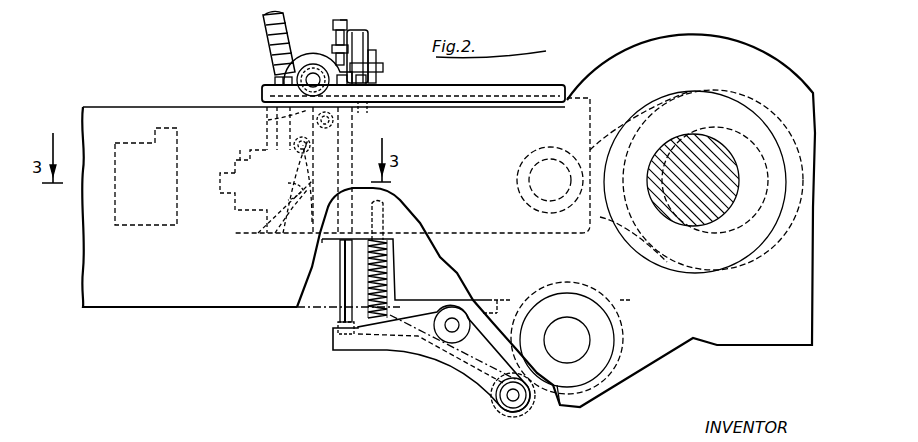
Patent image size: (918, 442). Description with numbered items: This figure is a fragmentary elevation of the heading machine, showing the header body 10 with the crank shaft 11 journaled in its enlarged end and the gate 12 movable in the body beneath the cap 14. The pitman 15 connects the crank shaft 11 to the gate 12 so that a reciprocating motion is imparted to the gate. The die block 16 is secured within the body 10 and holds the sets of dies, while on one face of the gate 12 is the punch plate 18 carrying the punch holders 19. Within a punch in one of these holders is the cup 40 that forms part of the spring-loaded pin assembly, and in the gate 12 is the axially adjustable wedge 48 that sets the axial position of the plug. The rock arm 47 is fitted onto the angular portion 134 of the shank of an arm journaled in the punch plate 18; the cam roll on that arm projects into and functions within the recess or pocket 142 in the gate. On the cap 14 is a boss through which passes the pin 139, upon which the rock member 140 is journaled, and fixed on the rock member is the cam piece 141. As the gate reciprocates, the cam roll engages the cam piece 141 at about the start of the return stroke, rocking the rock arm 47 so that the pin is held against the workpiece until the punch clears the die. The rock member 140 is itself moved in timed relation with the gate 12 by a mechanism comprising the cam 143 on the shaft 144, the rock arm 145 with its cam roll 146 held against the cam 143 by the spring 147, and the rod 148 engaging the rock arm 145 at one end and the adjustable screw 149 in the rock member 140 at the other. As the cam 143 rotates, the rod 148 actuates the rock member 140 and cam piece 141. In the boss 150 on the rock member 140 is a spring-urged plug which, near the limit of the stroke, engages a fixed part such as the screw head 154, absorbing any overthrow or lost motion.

The header body 10 is at (116, 295).
The crank shaft 11 is at (685, 133).
The gate 12 is at (592, 99).
The cap 14 is at (541, 86).
The pitman 15 is at (602, 217).
The die block 16 is at (148, 225).
The punch plate 18 is at (290, 243).
The punch holder 19 is at (240, 150).
The cup 40 is at (283, 233).
The rock arm 47 is at (280, 240).
The wedge 48 is at (370, 37).
The angular portion 134 is at (320, 147).
The pin 139 is at (312, 72).
The rock member 140 is at (321, 45).
The cam piece 141 is at (262, 116).
The recess or pocket 142 is at (317, 143).
The cam 143 is at (552, 390).
The shaft 144 is at (578, 333).
The rock arm 145 is at (405, 340).
The cam roll 146 is at (508, 413).
The spring 147 is at (388, 280).
The rod 148 is at (340, 312).
The adjustable screw 149 is at (346, 22).
The boss 150 is at (266, 36).
The screw head 154 is at (272, 82).